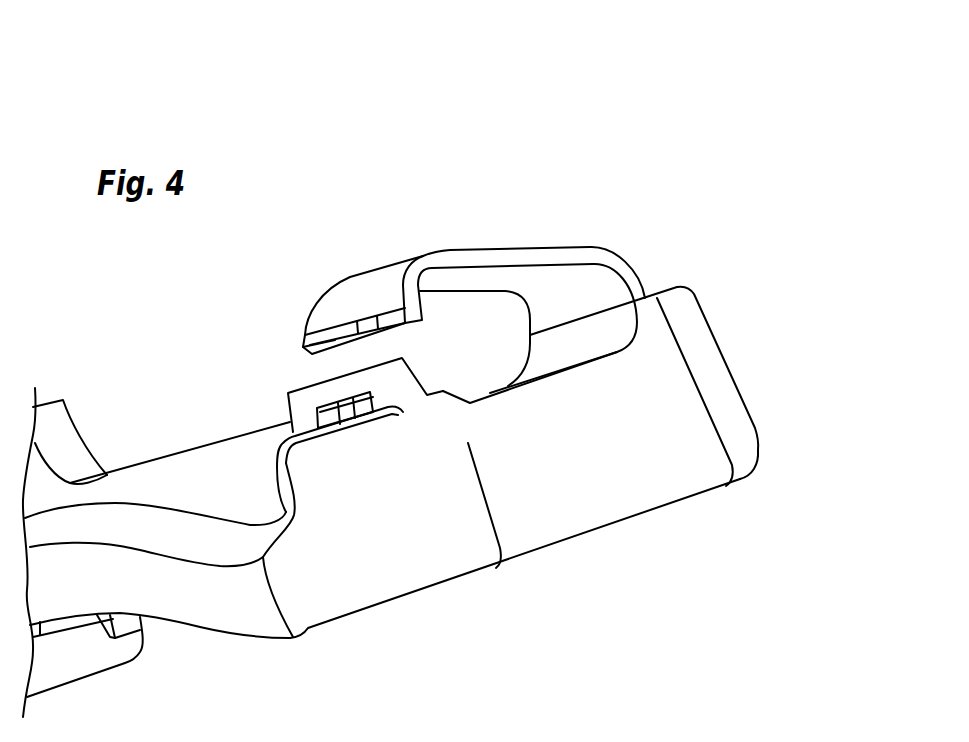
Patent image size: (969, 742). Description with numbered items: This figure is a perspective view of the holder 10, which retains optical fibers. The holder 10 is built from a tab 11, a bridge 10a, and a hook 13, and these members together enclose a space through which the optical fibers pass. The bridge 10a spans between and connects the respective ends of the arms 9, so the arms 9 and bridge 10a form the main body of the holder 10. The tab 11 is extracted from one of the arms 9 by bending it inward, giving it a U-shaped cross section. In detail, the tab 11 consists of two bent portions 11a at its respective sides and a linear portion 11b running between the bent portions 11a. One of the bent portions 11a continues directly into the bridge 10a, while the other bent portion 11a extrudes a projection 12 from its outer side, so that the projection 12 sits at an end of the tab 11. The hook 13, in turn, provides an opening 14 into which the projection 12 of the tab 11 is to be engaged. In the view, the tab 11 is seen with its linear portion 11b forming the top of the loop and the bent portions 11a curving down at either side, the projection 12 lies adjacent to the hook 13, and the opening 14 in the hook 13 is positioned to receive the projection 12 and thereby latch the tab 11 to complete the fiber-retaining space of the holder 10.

The arm 9 is at (226, 455).
The holder 10 is at (551, 109).
The bridge 10a is at (632, 482).
The tab 11 is at (556, 274).
The bent portion 11a is at (405, 277).
The linear portion 11b is at (510, 248).
The projection 12 is at (335, 328).
The hook 13 is at (302, 400).
The opening 14 is at (355, 400).